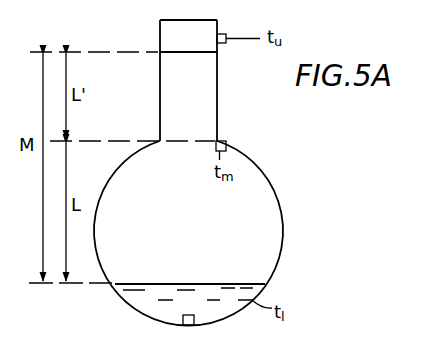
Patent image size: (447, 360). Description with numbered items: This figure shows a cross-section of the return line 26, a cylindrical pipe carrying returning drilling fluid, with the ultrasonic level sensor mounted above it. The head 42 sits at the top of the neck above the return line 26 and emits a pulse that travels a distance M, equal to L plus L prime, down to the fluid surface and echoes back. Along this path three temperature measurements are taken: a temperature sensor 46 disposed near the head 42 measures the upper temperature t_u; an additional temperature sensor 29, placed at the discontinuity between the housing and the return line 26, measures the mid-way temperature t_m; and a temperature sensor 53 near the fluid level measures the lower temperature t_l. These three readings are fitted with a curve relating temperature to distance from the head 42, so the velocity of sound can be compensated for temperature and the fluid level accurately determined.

The return line 26 is at (284, 226).
The head 42 is at (166, 33).
The temperature sensor 46 is at (225, 35).
The additional temperature sensor 29 is at (226, 143).
The temperature sensor 53 is at (181, 326).